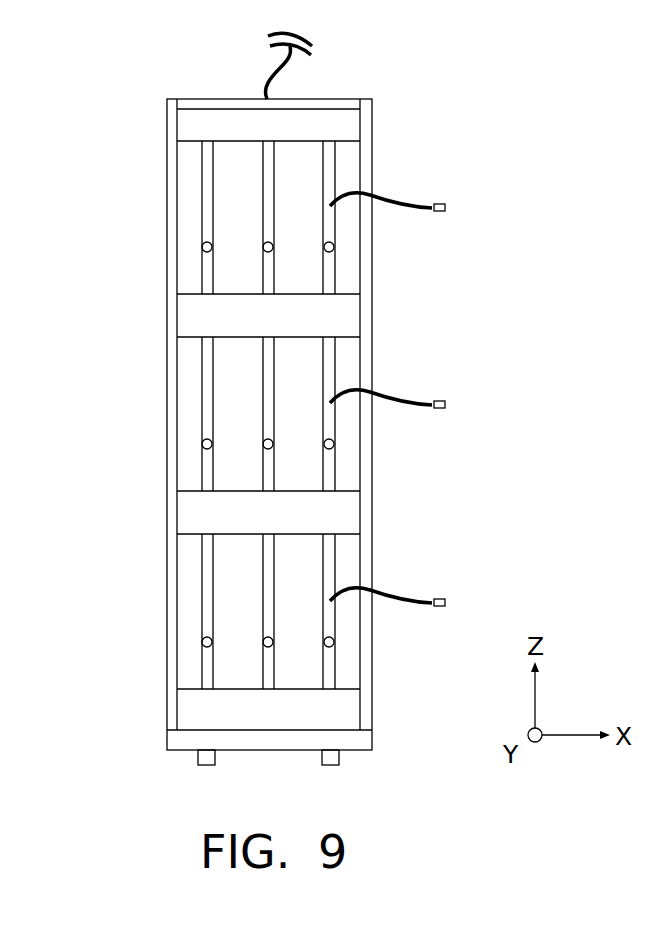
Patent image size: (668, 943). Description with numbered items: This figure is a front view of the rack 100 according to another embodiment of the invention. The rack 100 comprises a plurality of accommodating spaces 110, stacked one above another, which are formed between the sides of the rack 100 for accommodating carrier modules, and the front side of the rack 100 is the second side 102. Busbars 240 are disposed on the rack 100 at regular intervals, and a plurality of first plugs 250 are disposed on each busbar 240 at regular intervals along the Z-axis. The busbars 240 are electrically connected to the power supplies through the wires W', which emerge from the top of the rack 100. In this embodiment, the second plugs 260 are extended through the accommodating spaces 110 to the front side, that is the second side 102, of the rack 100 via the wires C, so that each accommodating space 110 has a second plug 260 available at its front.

The rack 100 is at (376, 83).
The second side 102 is at (330, 710).
The accommodating space 110 is at (190, 208).
The busbar 240 is at (203, 165).
The first plug 250 is at (202, 247).
The second plug 260 is at (446, 207).
The wire C is at (417, 207).
The wire W' is at (245, 66).